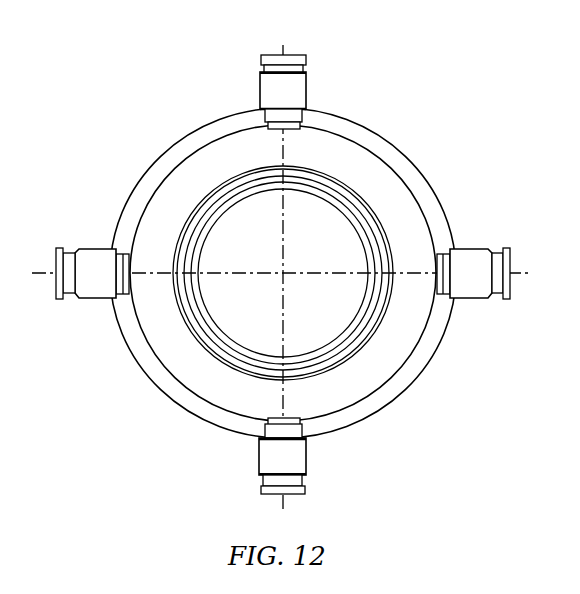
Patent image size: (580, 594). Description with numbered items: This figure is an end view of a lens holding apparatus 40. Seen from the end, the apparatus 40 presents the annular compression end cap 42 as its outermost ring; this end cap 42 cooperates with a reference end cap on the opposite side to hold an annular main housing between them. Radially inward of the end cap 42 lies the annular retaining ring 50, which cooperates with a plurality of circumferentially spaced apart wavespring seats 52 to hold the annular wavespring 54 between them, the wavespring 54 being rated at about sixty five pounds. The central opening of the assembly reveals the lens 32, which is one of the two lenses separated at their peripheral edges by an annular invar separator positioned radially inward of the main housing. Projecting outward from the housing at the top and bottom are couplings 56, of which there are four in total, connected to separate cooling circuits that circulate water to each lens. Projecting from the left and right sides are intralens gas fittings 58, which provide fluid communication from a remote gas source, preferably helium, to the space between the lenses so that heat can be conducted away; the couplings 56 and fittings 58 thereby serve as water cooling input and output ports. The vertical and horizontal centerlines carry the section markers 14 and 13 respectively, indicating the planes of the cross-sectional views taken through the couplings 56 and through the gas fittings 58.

The section line 13- 13 is at (32, 273).
The section line 14- 14 is at (285, 45).
The lens 32 is at (262, 249).
The lens holding apparatus 40 is at (455, 107).
The annular compression end cap 42 is at (353, 135).
The annular retaining ring 50 is at (378, 185).
The wavespring seats 52 is at (210, 205).
The annular wavespring 54 is at (358, 233).
The couplings 56 is at (298, 89).
The intralens gas fitting 58 is at (470, 295).